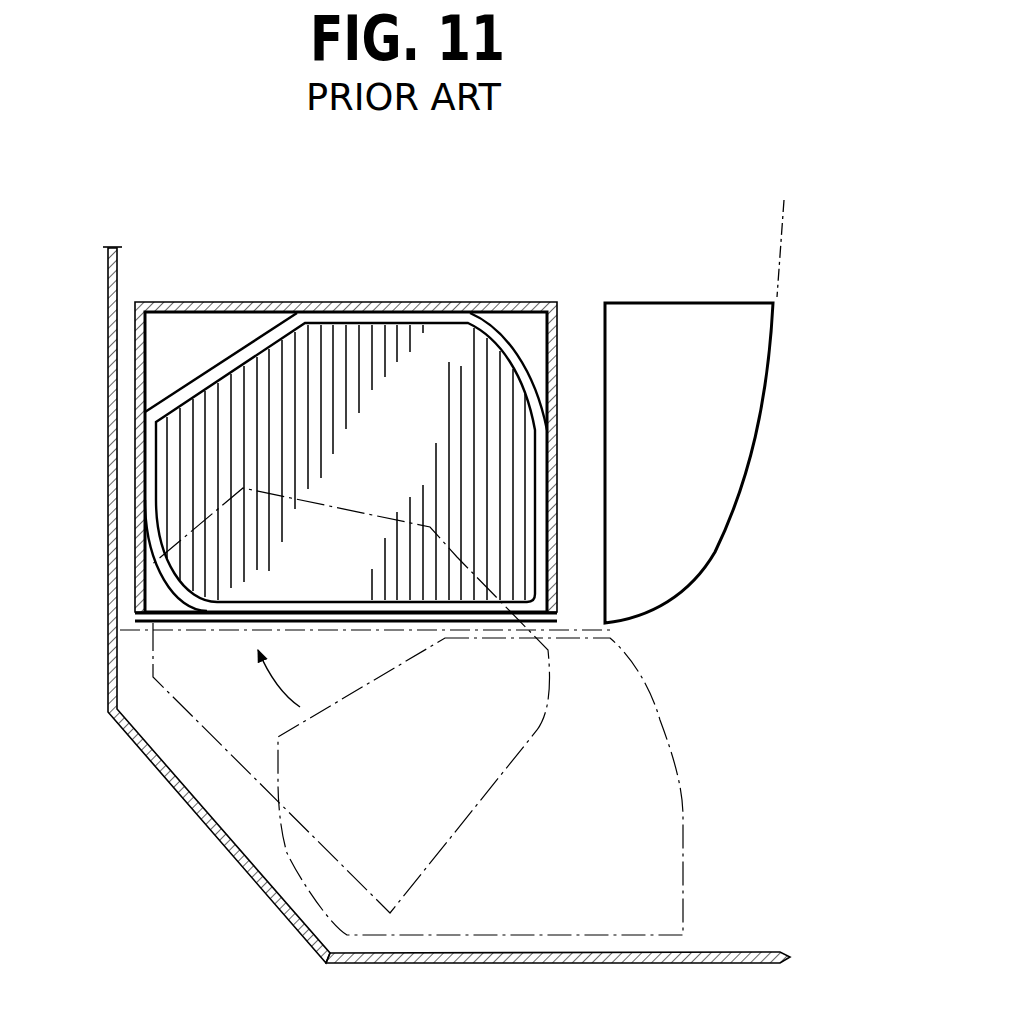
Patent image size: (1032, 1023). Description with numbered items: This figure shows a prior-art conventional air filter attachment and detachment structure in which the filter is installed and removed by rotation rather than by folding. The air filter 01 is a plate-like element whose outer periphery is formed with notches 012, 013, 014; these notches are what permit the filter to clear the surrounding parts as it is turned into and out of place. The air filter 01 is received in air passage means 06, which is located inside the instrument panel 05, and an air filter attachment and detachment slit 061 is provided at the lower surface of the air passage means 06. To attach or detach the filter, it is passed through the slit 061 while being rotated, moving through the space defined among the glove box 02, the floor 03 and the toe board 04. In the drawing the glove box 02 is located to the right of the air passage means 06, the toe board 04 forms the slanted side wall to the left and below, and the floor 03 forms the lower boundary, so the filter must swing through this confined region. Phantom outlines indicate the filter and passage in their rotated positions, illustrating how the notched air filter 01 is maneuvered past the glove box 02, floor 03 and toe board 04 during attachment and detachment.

The air filter 01 is at (296, 411).
The notch 012 is at (508, 347).
The notch 013 is at (203, 373).
The notch 014 is at (124, 557).
The glove box 02 is at (728, 472).
The floor 03 is at (543, 953).
The toe board 04 is at (190, 795).
The instrument panel 05 is at (784, 226).
The air passage means 06 is at (346, 457).
The air filter attachment and detachment slit 061 is at (387, 627).